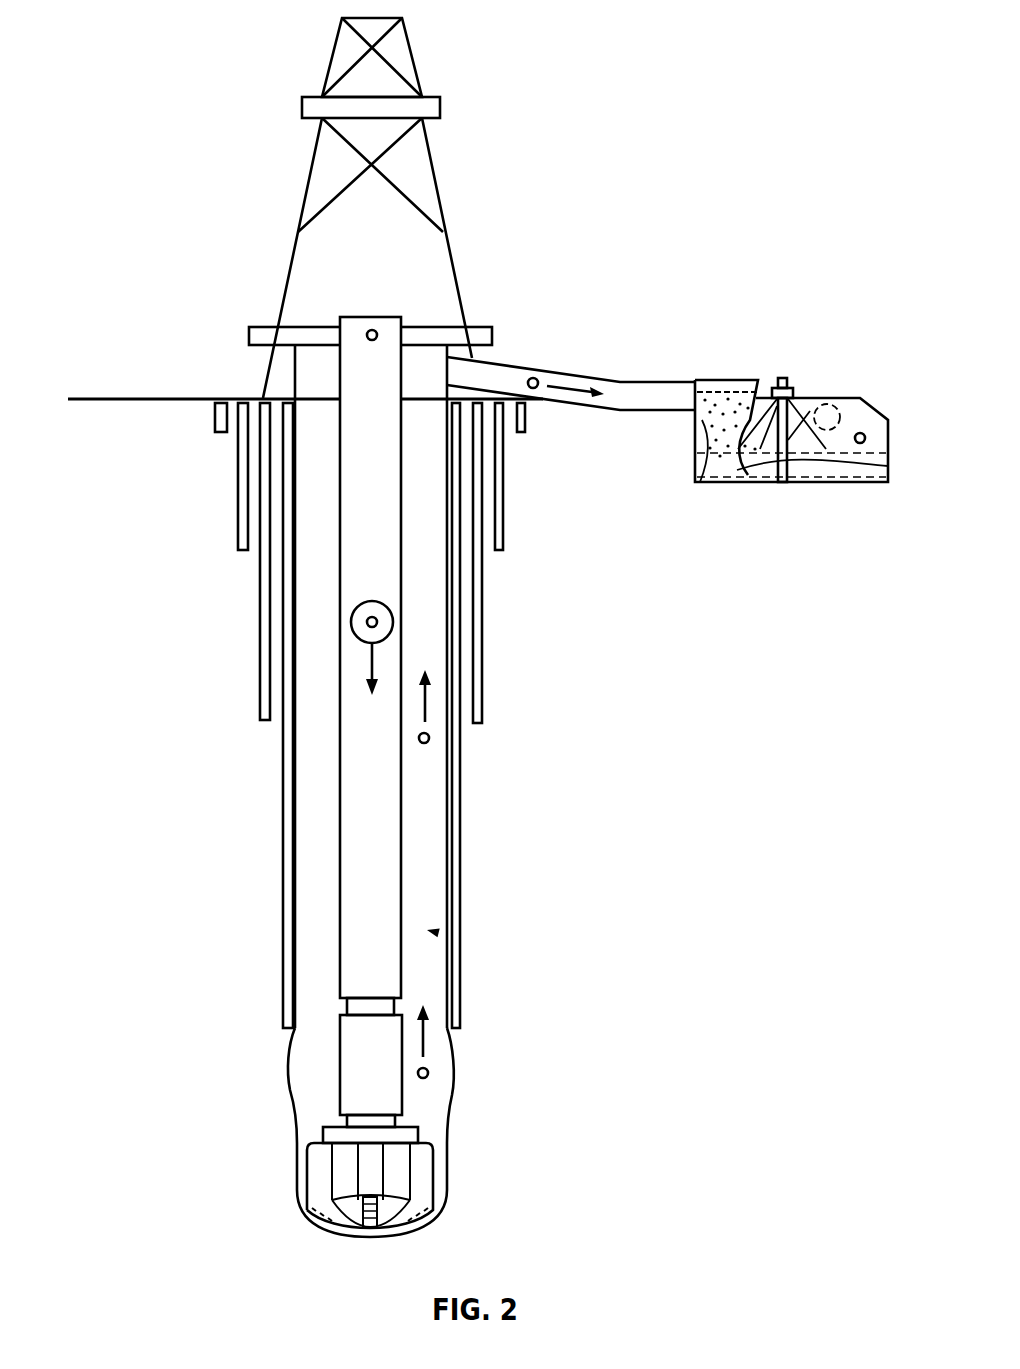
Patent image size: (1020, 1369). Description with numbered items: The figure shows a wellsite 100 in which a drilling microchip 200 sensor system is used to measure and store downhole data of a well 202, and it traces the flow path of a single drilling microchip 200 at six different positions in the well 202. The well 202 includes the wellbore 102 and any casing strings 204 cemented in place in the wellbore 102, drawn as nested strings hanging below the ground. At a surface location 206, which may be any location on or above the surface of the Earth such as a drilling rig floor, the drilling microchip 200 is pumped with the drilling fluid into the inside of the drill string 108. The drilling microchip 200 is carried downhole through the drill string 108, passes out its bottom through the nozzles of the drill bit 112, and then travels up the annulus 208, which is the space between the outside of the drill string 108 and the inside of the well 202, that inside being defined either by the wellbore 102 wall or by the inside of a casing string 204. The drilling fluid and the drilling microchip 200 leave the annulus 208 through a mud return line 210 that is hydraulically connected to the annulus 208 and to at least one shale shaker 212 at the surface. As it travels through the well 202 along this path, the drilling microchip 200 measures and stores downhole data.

The wellsite 100 is at (654, 121).
The wellbore 102 is at (289, 1078).
The drill string 108 is at (402, 522).
The drill bit 112 is at (440, 1172).
The drilling microchip 200 is at (367, 331).
The well 202 is at (502, 792).
The casing string 204 is at (283, 970).
The surface location 206 is at (128, 397).
The annulus 208 is at (437, 933).
The mud return line 210 is at (648, 382).
The shale shaker 212 is at (827, 398).